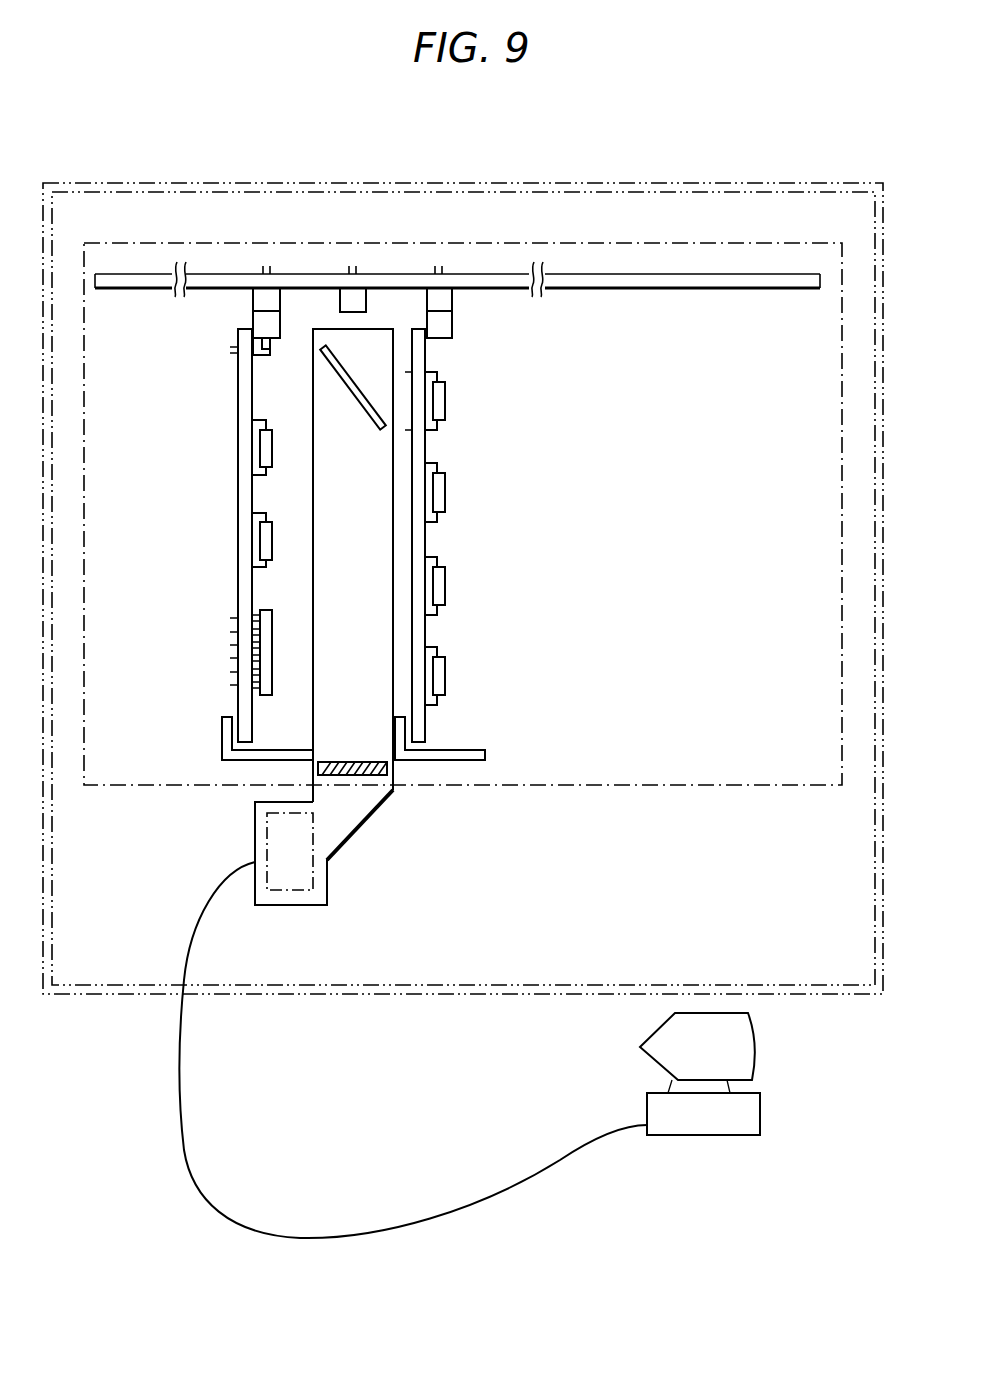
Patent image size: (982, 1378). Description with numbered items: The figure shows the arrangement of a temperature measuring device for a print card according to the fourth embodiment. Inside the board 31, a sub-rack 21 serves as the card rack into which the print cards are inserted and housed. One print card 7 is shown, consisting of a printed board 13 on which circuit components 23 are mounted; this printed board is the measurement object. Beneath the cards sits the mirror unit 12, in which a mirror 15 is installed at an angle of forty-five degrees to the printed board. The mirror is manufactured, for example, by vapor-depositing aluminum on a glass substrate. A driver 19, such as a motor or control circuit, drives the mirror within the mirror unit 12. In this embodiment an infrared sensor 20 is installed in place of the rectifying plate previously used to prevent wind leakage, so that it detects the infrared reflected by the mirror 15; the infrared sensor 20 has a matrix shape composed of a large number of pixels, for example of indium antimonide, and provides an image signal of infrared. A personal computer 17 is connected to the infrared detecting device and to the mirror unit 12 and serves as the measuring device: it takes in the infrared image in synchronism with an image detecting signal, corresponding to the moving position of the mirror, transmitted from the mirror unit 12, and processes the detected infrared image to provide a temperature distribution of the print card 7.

The board 31 is at (733, 183).
The sub-rack 21 is at (628, 243).
The mirror 15 is at (363, 385).
The print card 7 is at (232, 417).
The circuit components 23 is at (255, 615).
The printed board 13 is at (238, 700).
The infrared sensor 20 is at (372, 778).
The driver 19 is at (305, 878).
The mirror unit 12 is at (324, 876).
The personal computer 17 is at (688, 1125).